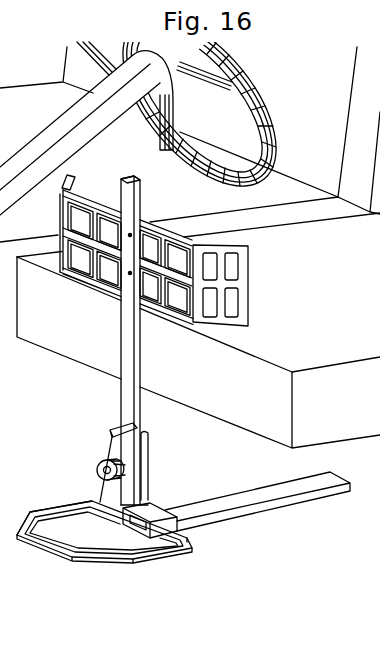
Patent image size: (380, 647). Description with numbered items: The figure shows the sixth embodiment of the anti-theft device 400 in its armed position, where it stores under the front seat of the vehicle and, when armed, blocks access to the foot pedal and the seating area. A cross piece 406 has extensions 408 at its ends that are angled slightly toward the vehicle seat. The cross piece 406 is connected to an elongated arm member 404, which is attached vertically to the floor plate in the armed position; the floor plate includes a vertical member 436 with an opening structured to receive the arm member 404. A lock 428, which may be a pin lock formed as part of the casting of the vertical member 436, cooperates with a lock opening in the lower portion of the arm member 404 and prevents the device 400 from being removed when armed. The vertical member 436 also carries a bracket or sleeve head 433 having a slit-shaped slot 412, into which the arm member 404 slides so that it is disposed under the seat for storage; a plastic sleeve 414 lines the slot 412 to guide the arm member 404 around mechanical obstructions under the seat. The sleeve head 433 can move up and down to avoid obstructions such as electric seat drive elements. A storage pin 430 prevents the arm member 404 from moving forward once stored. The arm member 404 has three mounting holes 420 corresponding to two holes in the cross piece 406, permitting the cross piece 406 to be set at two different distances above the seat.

The anti-theft device 400 is at (204, 567).
The arm member 404 is at (133, 363).
The cross piece 406 is at (130, 243).
The extensions 408 is at (243, 278).
The slot 412 is at (145, 538).
The plastic sleeve 414 is at (280, 490).
The mounting holes 420 is at (132, 195).
The lock 428 is at (100, 465).
The storage pin 430 is at (46, 502).
The sleeve head 433 is at (150, 507).
The vertical member 436 is at (115, 440).